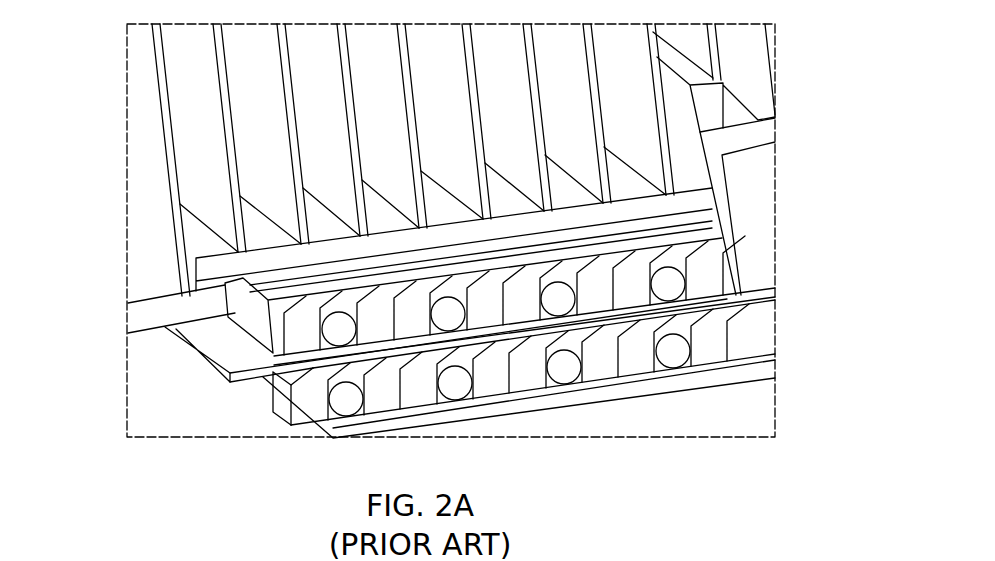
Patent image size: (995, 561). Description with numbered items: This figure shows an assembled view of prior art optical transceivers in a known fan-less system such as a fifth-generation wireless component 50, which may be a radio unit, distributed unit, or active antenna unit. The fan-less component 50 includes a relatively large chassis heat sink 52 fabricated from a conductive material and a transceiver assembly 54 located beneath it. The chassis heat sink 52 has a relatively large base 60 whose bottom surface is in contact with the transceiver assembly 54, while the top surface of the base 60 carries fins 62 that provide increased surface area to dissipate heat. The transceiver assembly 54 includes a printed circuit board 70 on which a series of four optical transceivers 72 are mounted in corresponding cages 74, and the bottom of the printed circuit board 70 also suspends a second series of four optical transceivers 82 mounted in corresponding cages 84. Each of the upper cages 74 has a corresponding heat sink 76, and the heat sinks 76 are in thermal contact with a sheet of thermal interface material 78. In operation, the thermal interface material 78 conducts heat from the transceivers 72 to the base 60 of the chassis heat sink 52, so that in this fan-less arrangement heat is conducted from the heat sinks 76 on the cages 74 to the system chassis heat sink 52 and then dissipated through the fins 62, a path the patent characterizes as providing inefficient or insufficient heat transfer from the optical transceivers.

The fan-less component 50 is at (119, 90).
The fins 62 is at (207, 189).
The base 60 is at (235, 262).
The chassis heat sink 52 is at (132, 298).
The transceiver assembly 54 is at (205, 360).
The printed circuit board 70 is at (246, 372).
The thermal interface material 78 is at (670, 224).
The heat sinks 76 is at (707, 217).
The cages 74 is at (693, 250).
The optical transceivers 72 is at (707, 270).
The cages 84 is at (742, 323).
The optical transceivers 82 is at (712, 353).